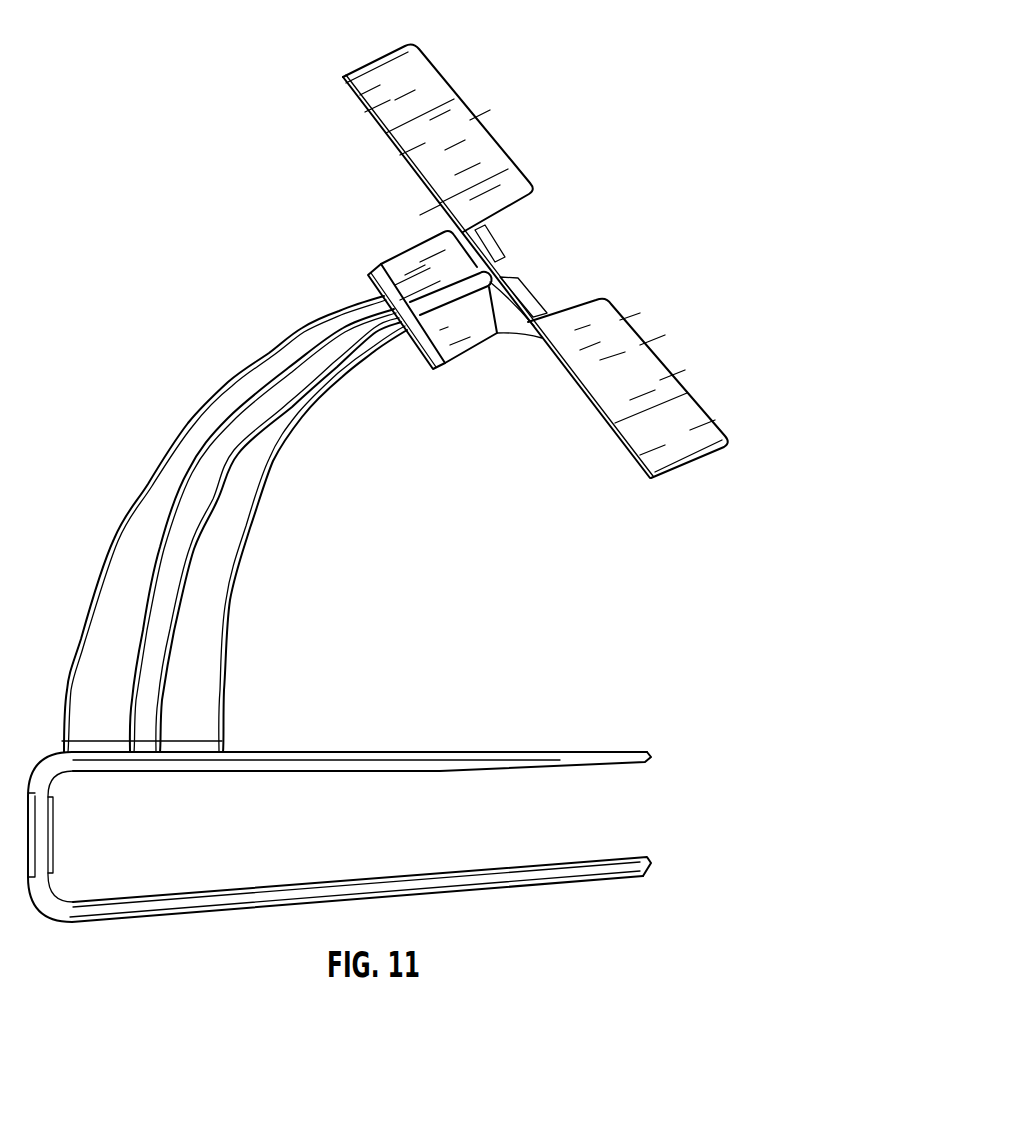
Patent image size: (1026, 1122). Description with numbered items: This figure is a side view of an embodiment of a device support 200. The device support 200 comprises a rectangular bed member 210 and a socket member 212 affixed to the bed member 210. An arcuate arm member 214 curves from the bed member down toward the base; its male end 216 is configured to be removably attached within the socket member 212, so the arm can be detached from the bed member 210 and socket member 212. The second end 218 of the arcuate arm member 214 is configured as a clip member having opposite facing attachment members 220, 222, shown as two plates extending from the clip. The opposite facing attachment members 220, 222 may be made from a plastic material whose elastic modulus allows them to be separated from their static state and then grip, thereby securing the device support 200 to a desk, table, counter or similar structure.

The device support 200 is at (678, 46).
The rectangular bed member 210 is at (474, 80).
The socket member 212 is at (481, 339).
The arcuate arm member 214 is at (233, 573).
The male end 216 is at (330, 320).
The second end 218 is at (307, 752).
The attachment member 220 is at (648, 757).
The attachment member 222 is at (648, 866).